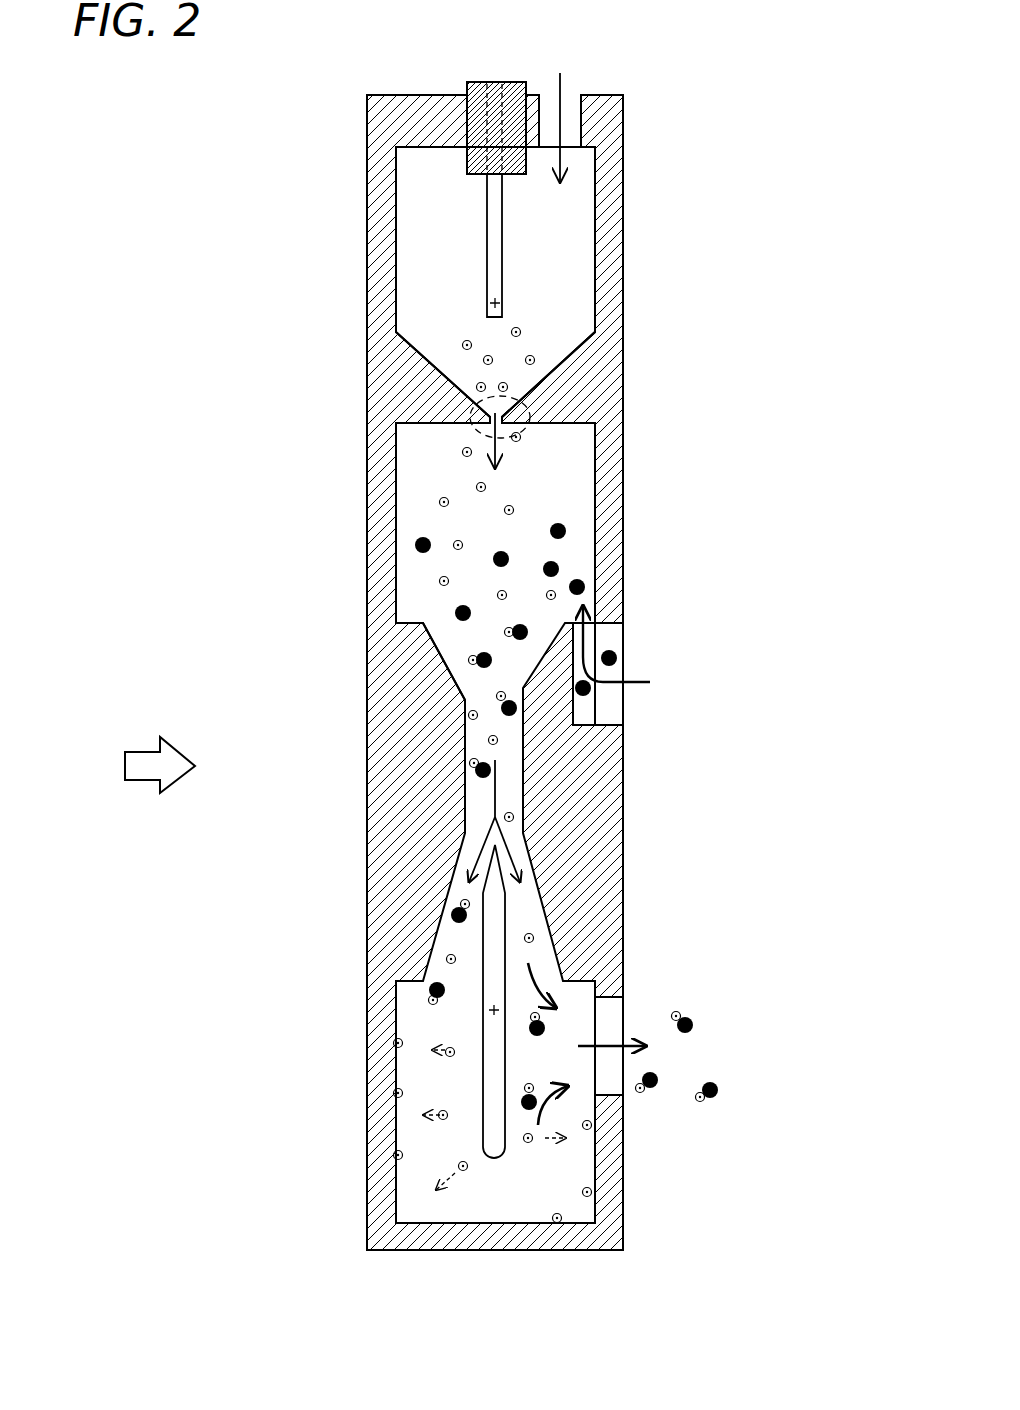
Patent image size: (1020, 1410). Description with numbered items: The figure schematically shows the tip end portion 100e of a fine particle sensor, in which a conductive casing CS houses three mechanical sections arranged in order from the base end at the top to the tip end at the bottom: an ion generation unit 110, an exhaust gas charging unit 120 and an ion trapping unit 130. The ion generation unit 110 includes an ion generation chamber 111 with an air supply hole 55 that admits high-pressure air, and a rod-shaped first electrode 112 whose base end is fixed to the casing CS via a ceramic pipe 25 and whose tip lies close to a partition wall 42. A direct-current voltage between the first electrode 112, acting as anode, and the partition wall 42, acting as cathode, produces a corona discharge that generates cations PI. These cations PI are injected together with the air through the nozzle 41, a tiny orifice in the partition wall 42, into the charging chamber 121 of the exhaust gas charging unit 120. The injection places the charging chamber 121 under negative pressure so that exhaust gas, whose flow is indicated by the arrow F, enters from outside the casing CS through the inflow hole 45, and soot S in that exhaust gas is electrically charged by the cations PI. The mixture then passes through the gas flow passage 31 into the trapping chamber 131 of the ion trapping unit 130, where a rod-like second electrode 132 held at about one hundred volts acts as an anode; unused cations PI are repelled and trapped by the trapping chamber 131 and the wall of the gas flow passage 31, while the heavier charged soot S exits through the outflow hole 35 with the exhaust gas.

The ceramic pipe 25 is at (473, 132).
The air supply hole 55 is at (579, 128).
The ion generation chamber 111 is at (453, 212).
The first electrode 112 is at (516, 242).
The ion generation unit 110 is at (706, 268).
The tip end portion 100e is at (246, 280).
The cations PI is at (462, 346).
The nozzle 41 is at (470, 415).
The partition wall 42 is at (570, 390).
The charging chamber 121 is at (445, 467).
The exhaust gas charging unit 120 is at (706, 516).
The soot S is at (418, 546).
The inflow hole 45 is at (608, 627).
The gas flow passage 31 is at (480, 700).
The casing CS is at (597, 802).
The outflow hole 35 is at (607, 998).
The second electrode 132 is at (467, 1024).
The trapping chamber 131 is at (513, 1205).
The ion trapping unit 130 is at (688, 1153).
The exhaust gas flow F is at (130, 767).